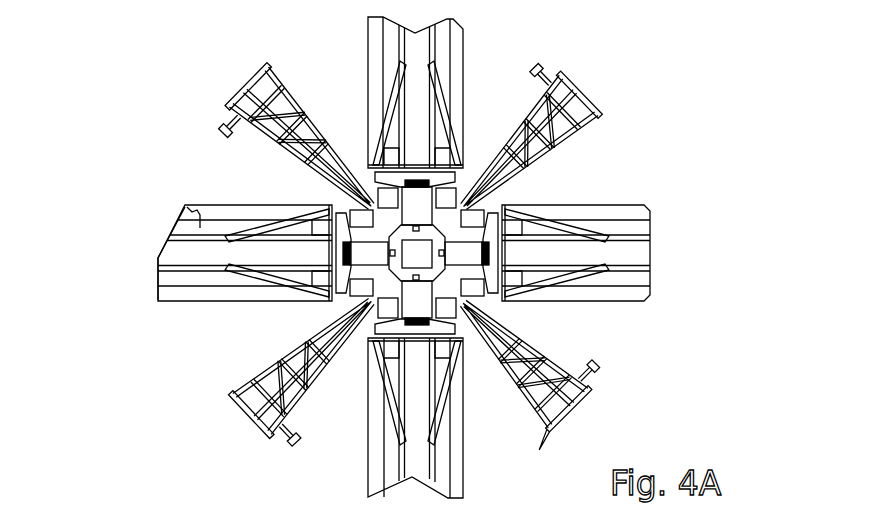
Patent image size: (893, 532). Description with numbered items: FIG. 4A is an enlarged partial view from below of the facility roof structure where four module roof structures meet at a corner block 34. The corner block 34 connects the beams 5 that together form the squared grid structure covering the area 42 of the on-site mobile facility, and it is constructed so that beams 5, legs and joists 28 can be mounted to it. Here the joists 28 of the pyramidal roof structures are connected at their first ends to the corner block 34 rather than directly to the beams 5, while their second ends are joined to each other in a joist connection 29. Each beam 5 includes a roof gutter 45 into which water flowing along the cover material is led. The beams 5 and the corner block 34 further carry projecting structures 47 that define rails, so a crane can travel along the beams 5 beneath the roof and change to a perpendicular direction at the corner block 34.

The joist connection 29 is at (120, 108).
The beam 5 is at (375, 63).
The projecting structure 47 is at (415, 68).
The joist 28 is at (247, 87).
The corner block 34 is at (445, 222).
The roof gutter 45 is at (198, 225).
The area 42 is at (172, 242).